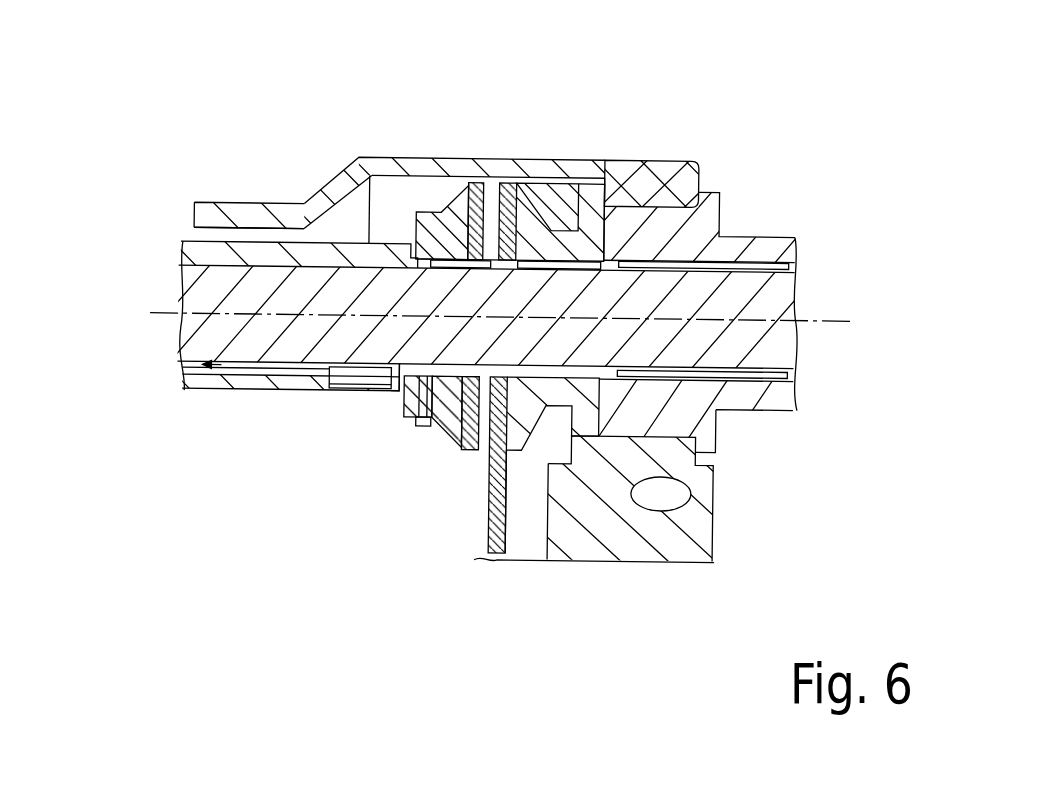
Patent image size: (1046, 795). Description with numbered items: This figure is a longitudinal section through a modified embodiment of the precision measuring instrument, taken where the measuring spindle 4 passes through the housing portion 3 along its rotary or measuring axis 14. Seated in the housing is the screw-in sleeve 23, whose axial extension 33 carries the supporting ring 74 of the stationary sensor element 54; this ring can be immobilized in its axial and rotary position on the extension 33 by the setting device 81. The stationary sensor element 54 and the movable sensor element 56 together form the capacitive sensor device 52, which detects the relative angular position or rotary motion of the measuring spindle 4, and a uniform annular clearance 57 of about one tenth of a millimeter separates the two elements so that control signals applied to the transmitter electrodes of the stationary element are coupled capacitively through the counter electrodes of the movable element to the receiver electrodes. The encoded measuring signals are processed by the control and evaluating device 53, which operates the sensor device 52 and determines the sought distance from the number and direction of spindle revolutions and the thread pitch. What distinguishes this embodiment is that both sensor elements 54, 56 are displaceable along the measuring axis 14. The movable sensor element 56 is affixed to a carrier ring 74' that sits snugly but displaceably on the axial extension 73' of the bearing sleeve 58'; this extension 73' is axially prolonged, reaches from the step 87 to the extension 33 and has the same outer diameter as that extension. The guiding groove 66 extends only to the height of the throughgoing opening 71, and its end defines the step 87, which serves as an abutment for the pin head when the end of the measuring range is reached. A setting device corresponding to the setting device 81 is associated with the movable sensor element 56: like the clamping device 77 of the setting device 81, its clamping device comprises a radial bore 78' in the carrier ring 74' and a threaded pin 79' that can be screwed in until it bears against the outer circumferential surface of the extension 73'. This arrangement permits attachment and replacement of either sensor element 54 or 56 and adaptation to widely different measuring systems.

The housing portion 3 is at (345, 205).
The measuring spindle 4 is at (240, 265).
The measuring axis 14 is at (205, 302).
The screw-in sleeve 23 is at (792, 232).
The axial extension 33 is at (703, 162).
The sensor device 52 is at (520, 150).
The control and evaluating device 53 is at (453, 600).
The stationary sensor element 54 is at (538, 228).
The movable sensor element 56 is at (483, 182).
The annular clearance 57 is at (491, 200).
The bearing sleeve 58' is at (254, 179).
The guiding groove 66 is at (185, 378).
The throughgoing opening 71 is at (343, 395).
The axial extension 73' is at (443, 495).
The supporting ring 74 is at (602, 148).
The carrier ring 74' is at (431, 158).
The clamping device 77 is at (388, 460).
The radial bore 78' is at (360, 441).
The threaded pin 79' is at (422, 461).
The setting device 81 is at (356, 563).
The step 87 is at (318, 378).